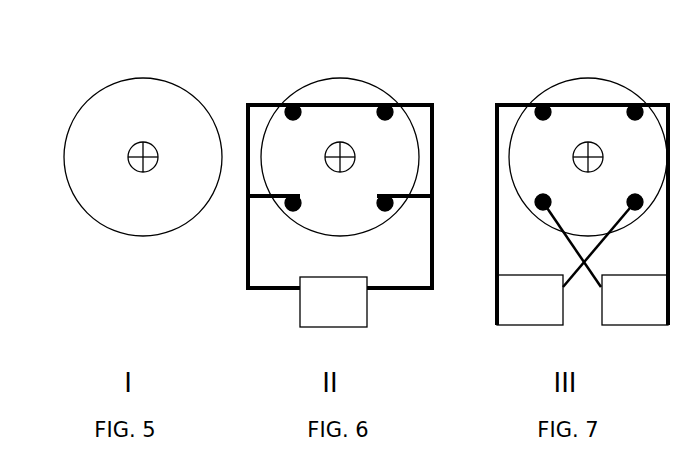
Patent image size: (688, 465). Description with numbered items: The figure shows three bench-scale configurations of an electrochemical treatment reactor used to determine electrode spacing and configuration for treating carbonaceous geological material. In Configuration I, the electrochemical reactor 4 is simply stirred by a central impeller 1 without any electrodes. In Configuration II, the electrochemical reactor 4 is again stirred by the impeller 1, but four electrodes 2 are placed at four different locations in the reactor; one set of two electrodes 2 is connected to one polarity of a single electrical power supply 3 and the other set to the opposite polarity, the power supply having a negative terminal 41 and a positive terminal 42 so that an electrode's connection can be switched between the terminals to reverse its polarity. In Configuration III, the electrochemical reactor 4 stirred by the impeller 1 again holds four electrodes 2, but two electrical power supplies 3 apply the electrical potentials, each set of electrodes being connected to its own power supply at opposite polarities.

In FIG. 5, the impeller 1 is at (143, 172).
In FIG. 6, the impeller 1 is at (350, 150).
In FIG. 7, the impeller 1 is at (595, 148).
In FIG. 6, the electrodes 2 is at (293, 112).
In FIG. 7, the electrodes 2 is at (543, 202).
In FIG. 6, the electrical power supply 3 is at (317, 307).
In FIG. 7, the electrical power supply 3 is at (627, 307).
In FIG. 5, the electrochemical reactor 4 is at (77, 120).
In FIG. 6, the electrochemical reactor 4 is at (420, 160).
In FIG. 7, the electrochemical reactor 4 is at (545, 95).
In FIG. 6, the negative terminal 41 is at (365, 290).
In FIG. 6, the positive terminal 42 is at (300, 290).